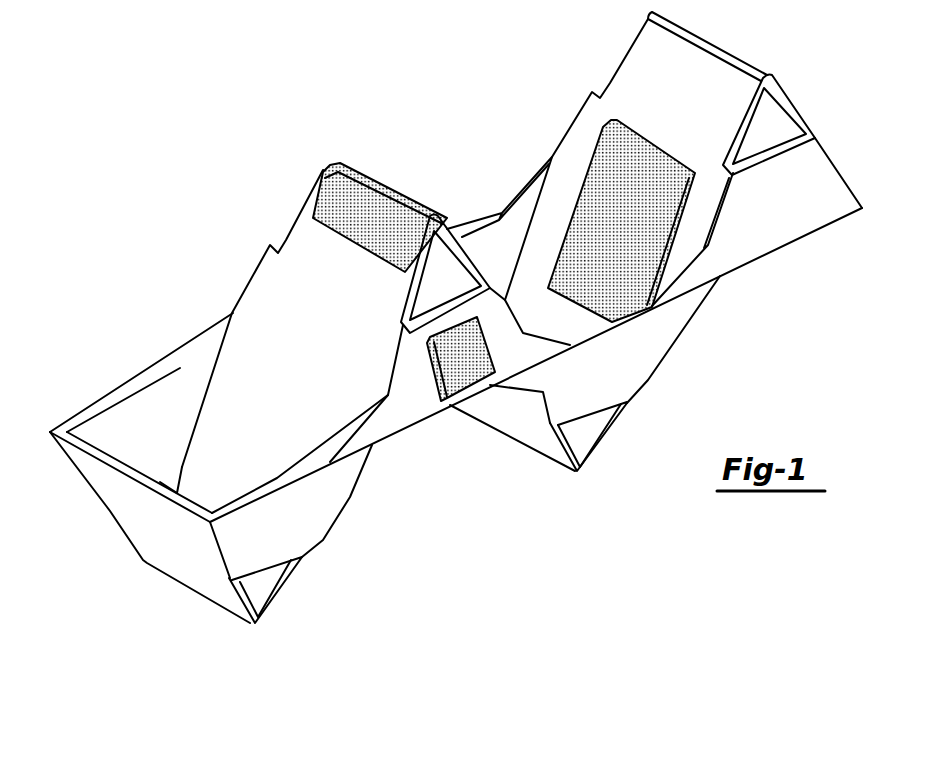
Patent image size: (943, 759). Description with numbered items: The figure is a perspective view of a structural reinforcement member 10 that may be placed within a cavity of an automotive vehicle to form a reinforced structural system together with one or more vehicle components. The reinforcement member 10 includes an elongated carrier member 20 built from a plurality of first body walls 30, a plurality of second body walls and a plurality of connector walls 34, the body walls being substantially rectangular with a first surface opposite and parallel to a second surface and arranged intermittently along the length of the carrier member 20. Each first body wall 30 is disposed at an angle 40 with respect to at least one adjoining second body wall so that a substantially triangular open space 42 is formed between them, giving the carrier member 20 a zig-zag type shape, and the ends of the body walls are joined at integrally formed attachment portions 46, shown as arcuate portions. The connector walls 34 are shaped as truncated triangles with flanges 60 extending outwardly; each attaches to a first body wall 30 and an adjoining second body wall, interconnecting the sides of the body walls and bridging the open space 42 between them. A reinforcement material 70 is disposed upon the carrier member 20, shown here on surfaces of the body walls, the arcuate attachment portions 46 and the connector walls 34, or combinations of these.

The structural reinforcement member 10 is at (437, 86).
The carrier member 20 is at (275, 287).
The first body wall 30 is at (187, 559).
The connector wall 34 is at (155, 456).
The angle 40 is at (436, 256).
The triangular open space 42 is at (181, 447).
The attachment portion 46 is at (262, 618).
The flange 60 is at (382, 425).
The reinforcement material 70 is at (323, 203).